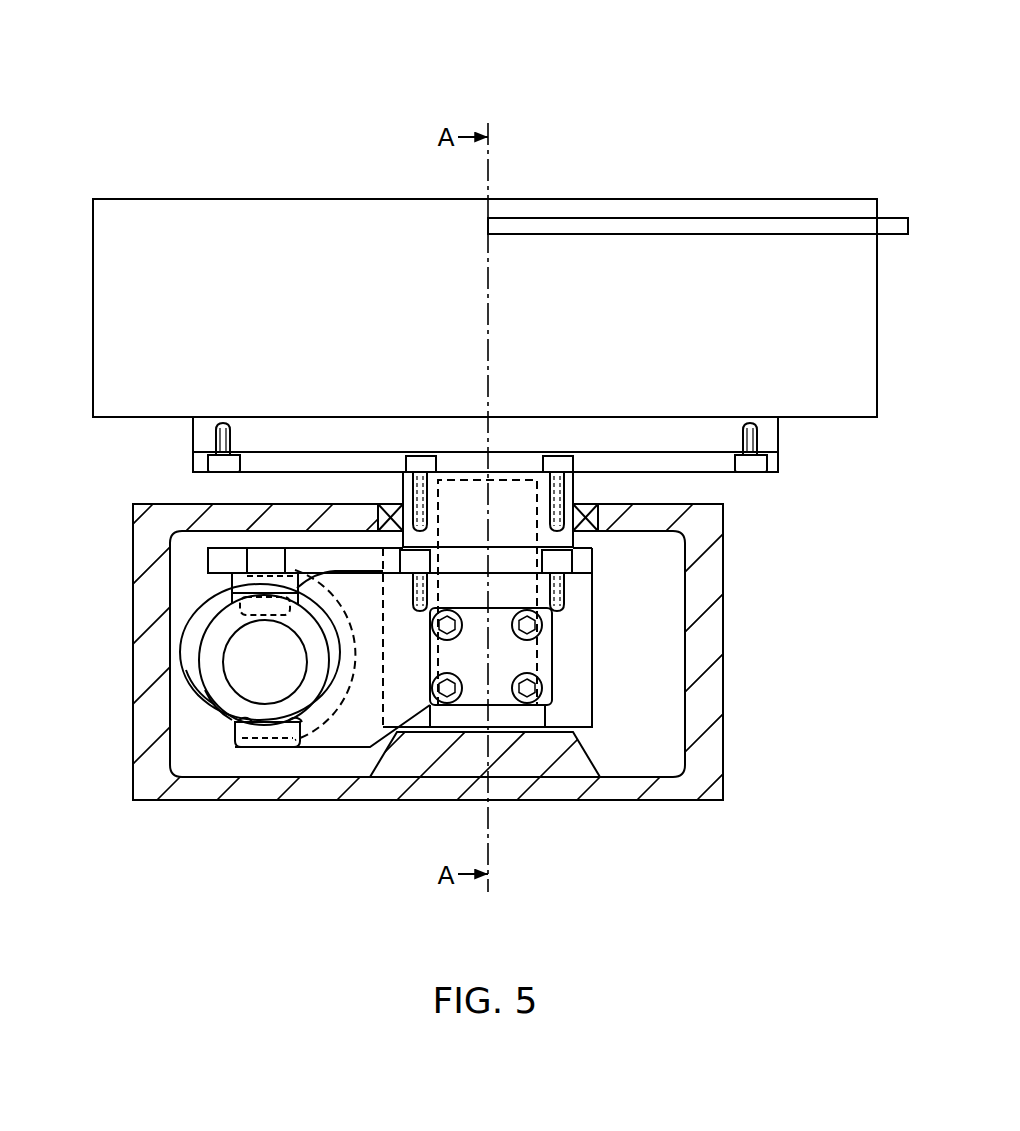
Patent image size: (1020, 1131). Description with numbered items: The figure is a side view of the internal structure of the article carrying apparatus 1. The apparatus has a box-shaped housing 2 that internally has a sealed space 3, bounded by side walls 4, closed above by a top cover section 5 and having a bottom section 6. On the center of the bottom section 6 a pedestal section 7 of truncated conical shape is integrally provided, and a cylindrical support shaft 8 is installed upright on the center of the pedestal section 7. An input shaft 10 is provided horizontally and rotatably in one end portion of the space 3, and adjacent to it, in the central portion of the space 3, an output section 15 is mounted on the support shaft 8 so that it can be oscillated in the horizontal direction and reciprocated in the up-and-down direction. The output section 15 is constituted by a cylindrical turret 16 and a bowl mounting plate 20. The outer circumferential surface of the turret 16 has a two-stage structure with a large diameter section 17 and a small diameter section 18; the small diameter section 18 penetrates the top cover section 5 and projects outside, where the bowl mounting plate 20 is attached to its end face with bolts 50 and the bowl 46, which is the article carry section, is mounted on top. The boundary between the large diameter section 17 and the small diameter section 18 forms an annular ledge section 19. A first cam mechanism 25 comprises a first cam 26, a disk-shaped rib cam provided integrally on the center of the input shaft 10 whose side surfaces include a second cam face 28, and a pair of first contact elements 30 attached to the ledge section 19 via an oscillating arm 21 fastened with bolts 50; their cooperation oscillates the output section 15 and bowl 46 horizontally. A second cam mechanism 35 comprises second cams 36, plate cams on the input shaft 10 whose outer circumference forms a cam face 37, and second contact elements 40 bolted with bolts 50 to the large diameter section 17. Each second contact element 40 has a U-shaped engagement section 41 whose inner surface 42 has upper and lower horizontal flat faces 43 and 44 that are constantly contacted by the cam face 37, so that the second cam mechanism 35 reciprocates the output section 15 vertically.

The article carrying apparatus 1 is at (248, 112).
The housing 2 is at (510, 669).
The space 3 is at (645, 768).
The side wall 4 is at (147, 692).
The top cover section 5 is at (655, 510).
The bottom section 6 is at (148, 782).
The pedestal section 7 is at (580, 755).
The support shaft 8 is at (500, 497).
The input shaft 10 is at (238, 650).
The output section 15 is at (397, 492).
The turret 16 is at (597, 608).
The large diameter section 17 is at (583, 650).
The small diameter section 18 is at (575, 540).
The ledge section 19 is at (513, 568).
The bowl mounting plate 20 is at (778, 462).
The oscillating arm 21 is at (232, 562).
The first cam mechanism 25 is at (199, 673).
The first cam 26 is at (200, 620).
The second cam face 28 is at (190, 660).
The first contact elements 30 is at (235, 592).
The second cam mechanism 35 is at (234, 735).
The second cam 36 is at (230, 716).
The cam face 37 is at (212, 700).
The second contact element 40 is at (347, 728).
The engagement section 41 is at (275, 744).
The inner surface 42 is at (247, 756).
The flat face 43 is at (248, 572).
The flat face 44 is at (298, 722).
The bowl 46 is at (362, 212).
The bolts 50 is at (223, 448).